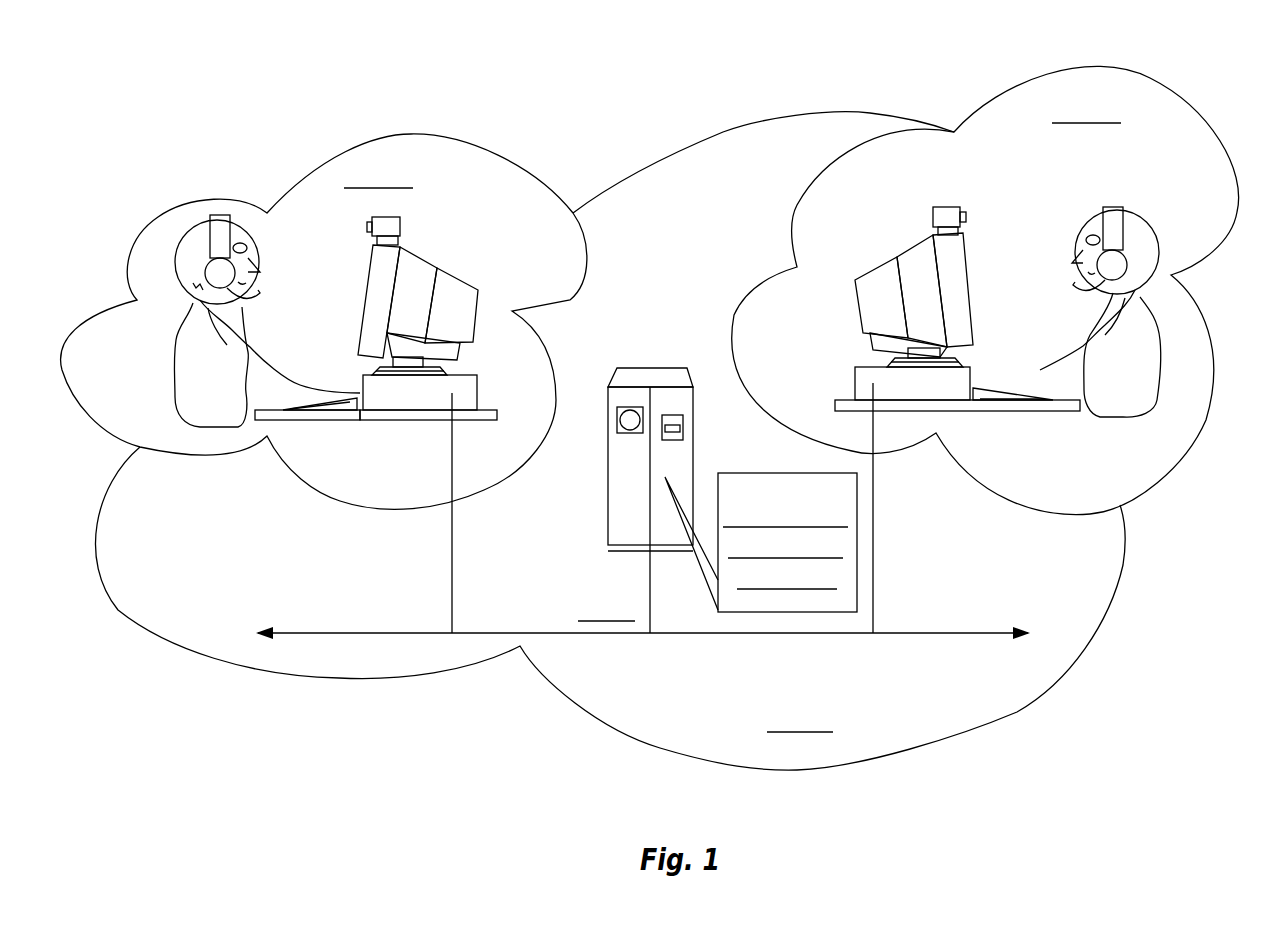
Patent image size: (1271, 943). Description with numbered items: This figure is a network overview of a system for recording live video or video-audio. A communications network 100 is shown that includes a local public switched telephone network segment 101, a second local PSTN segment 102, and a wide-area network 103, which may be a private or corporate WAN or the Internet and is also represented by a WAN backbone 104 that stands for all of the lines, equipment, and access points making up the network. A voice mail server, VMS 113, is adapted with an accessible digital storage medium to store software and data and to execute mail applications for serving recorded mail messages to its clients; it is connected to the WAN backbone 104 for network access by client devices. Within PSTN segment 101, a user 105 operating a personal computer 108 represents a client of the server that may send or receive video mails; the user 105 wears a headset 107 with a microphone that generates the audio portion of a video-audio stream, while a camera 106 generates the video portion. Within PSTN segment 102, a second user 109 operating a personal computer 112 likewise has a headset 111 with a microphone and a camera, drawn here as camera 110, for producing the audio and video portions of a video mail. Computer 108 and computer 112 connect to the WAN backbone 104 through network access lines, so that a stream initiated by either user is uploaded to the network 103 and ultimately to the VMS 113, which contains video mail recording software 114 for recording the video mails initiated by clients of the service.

The communications network 100 is at (621, 126).
The local public switched telephone network segment 101 is at (435, 128).
The local PSTN segment 102 is at (1200, 433).
The wide-area-network 103 is at (514, 650).
The WAN backbone 104 is at (378, 631).
The user 105 is at (172, 343).
The camera 106 is at (400, 222).
The headset 107 is at (182, 270).
The personal computer 108 is at (357, 293).
The user 109 is at (1095, 447).
The second video camera 110 is at (947, 205).
The headset 111 is at (1163, 270).
The personal computer 112 is at (970, 283).
The voice mail server 113 is at (594, 487).
The video mail recording software 114 is at (780, 471).